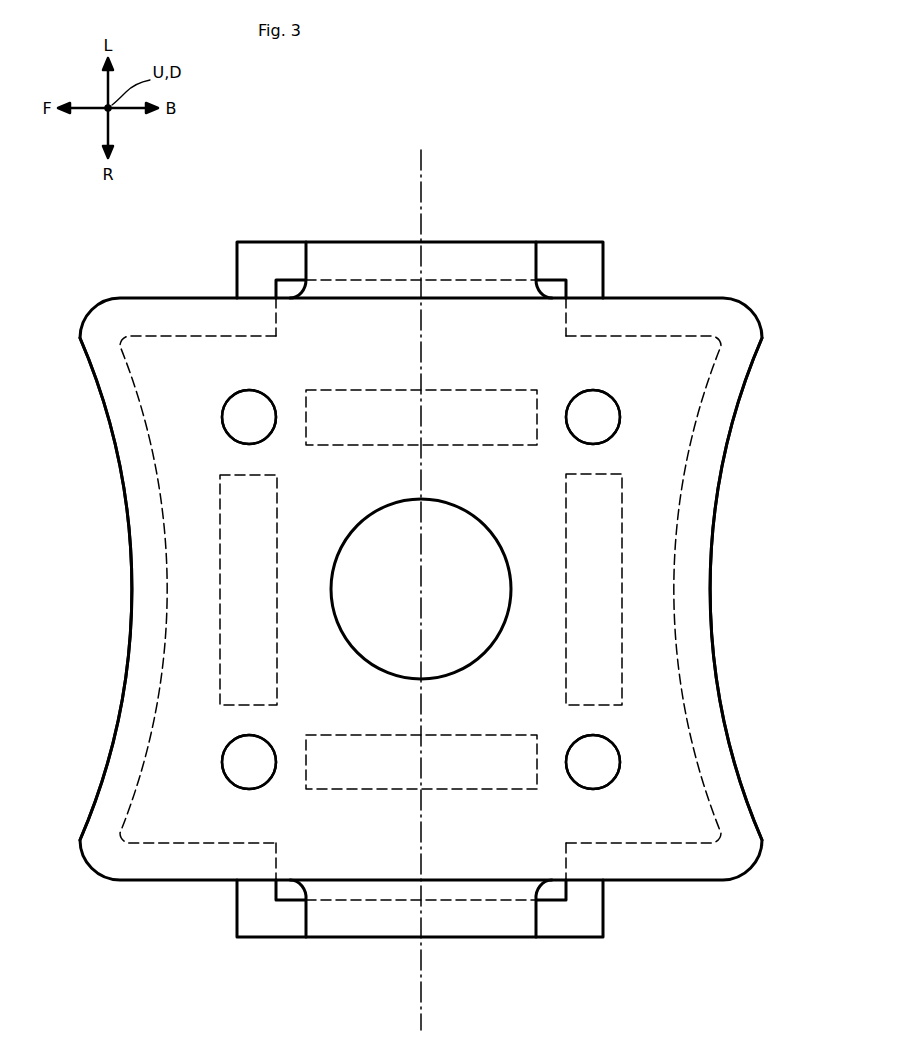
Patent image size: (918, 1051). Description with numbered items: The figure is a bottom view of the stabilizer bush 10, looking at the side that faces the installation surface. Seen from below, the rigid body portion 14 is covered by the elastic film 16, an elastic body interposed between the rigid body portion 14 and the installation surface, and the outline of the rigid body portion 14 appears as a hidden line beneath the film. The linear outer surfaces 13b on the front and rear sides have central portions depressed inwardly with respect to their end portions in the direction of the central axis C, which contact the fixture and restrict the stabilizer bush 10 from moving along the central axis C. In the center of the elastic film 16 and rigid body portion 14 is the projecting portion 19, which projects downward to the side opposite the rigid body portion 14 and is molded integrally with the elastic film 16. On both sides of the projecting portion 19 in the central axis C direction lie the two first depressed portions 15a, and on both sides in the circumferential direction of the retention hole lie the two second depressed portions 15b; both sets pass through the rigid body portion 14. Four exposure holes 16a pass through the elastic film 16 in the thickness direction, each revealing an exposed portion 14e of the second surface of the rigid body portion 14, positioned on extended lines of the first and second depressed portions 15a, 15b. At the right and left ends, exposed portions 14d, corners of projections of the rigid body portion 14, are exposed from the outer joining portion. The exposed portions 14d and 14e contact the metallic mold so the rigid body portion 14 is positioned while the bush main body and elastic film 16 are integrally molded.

The stabilizer bush 10 is at (677, 206).
The rigid body portion 14 is at (665, 337).
The exposed portion 14d is at (289, 291).
The exposed portion 14e is at (251, 405).
The exposure hole 16a is at (232, 432).
The elastic film 16 is at (666, 465).
The first depressed portion 15a is at (412, 393).
The second depressed portion 15b is at (276, 582).
The linear outer surface 13b is at (128, 556).
The projecting portion 19 is at (473, 638).
The central axis C is at (422, 157).